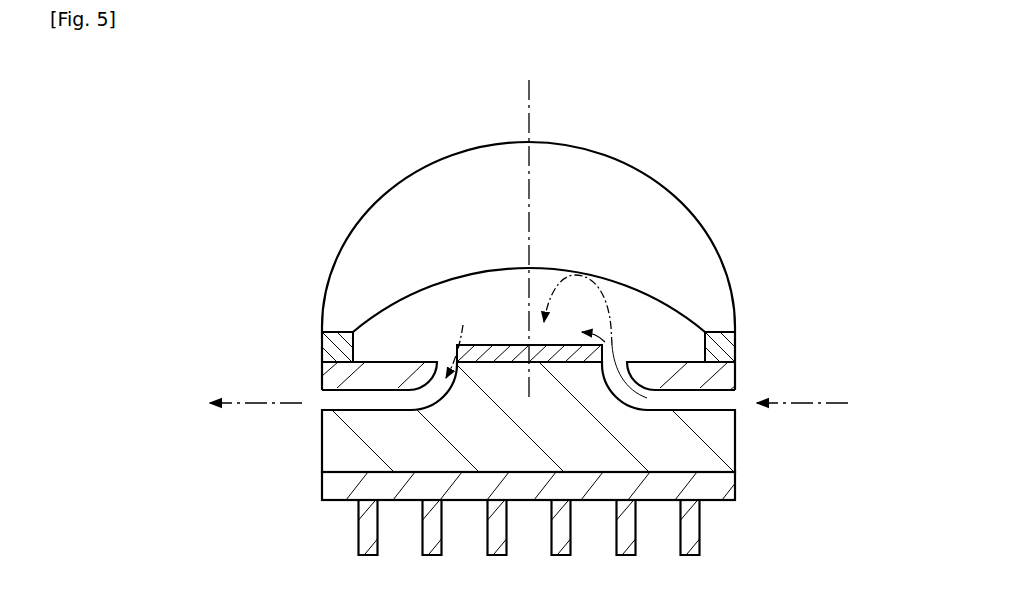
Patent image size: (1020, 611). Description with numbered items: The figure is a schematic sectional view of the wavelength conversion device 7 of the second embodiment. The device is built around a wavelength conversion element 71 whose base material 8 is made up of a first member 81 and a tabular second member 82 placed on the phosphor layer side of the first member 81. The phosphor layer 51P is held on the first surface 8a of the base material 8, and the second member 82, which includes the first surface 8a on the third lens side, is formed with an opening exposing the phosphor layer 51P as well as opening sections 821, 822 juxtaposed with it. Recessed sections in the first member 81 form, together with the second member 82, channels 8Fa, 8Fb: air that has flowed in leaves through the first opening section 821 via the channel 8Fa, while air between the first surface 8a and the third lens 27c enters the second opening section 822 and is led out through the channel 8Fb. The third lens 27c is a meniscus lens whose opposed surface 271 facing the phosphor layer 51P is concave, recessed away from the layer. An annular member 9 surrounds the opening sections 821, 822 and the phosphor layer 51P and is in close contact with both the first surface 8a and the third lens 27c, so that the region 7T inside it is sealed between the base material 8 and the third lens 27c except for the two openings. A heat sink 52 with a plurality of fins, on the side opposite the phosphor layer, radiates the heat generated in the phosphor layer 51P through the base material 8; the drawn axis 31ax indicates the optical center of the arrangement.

The wavelength conversion device 7 is at (561, 245).
The third lens 27c is at (700, 243).
The opposed surface 271 is at (428, 288).
The region 7T is at (499, 286).
The optical axis 31ax is at (530, 95).
The base material 8 is at (577, 425).
The first member 81 is at (715, 460).
The second member 82 is at (675, 383).
The opening section 821 is at (618, 368).
The opening section 822 is at (442, 375).
The first surface 8a is at (397, 360).
The channel 8Fa is at (700, 382).
The channel 8Fb is at (352, 381).
The annular member 9 is at (340, 345).
The phosphor layer 51P is at (575, 362).
The heat sink 52 is at (333, 486).
The wavelength conversion element 71 is at (282, 439).